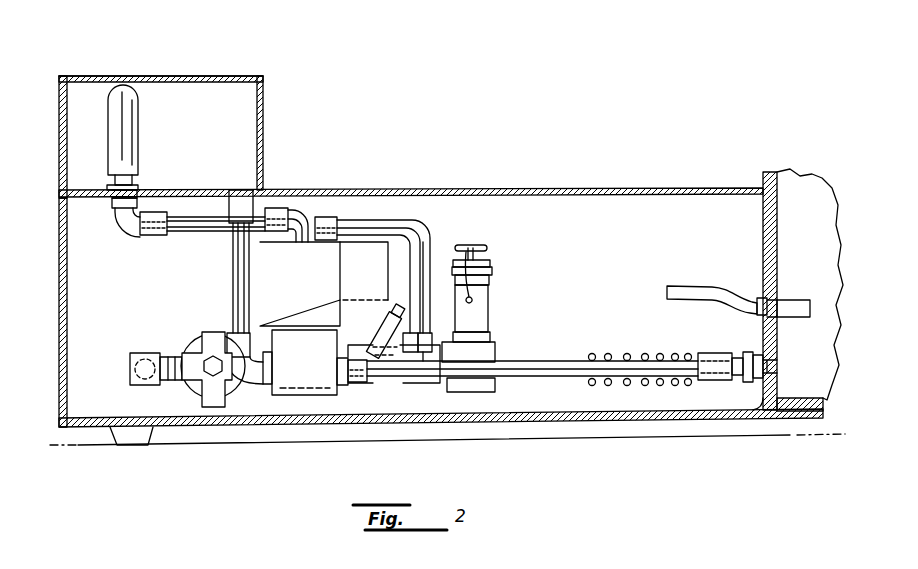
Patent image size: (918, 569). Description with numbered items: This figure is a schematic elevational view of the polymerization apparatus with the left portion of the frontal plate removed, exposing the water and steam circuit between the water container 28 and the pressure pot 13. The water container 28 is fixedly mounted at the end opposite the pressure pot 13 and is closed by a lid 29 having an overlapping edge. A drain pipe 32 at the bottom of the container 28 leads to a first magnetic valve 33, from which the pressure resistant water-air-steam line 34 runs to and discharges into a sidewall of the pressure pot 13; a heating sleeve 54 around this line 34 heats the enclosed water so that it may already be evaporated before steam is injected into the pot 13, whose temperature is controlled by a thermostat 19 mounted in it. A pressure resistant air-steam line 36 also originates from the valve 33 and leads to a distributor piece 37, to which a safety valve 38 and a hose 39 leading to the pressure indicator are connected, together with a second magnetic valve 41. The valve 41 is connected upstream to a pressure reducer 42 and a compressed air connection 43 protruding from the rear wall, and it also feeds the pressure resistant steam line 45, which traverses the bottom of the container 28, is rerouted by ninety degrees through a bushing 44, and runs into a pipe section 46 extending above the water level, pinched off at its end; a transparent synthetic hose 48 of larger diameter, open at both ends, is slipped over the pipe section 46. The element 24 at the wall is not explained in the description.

The pressure pot 13 is at (757, 248).
The thermostat 19 is at (793, 305).
The mounting wall plate 24 is at (763, 207).
The water container 28 is at (266, 110).
The lid 29 is at (217, 76).
The drain pipe 32 is at (232, 255).
The first magnetic valve 33 is at (316, 369).
The water-air-steam line 34 is at (513, 367).
The air-steam line 36 is at (430, 230).
The distributor piece 37 is at (413, 385).
The safety valve 38 is at (483, 313).
The hose 39 is at (388, 324).
The second magnetic valve 41 is at (308, 291).
The pressure reducer 42 is at (192, 352).
The compressed air connection 43 is at (143, 353).
The bushing 44 is at (142, 188).
The steam line 45 is at (200, 224).
The pipe section 46 is at (112, 184).
The transparent synthetic hose 48 is at (138, 104).
The heating sleeve 54 is at (662, 352).